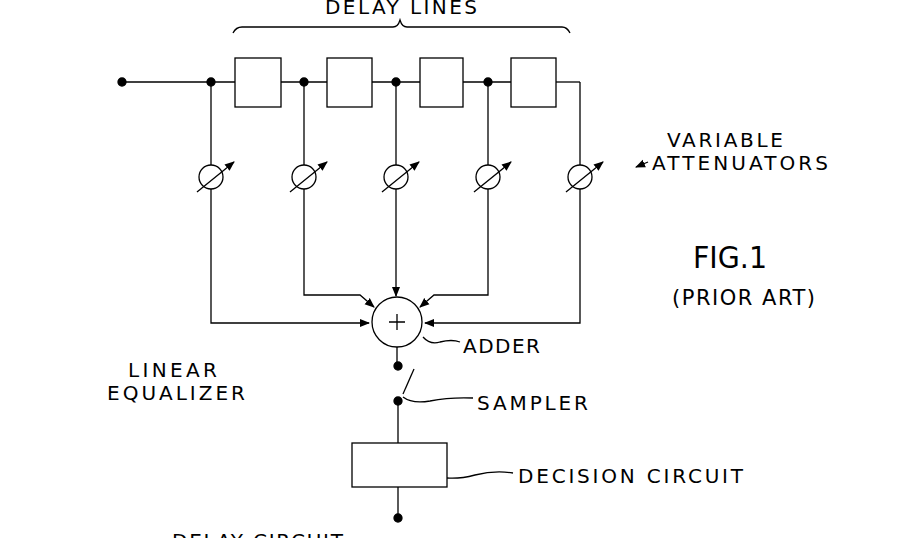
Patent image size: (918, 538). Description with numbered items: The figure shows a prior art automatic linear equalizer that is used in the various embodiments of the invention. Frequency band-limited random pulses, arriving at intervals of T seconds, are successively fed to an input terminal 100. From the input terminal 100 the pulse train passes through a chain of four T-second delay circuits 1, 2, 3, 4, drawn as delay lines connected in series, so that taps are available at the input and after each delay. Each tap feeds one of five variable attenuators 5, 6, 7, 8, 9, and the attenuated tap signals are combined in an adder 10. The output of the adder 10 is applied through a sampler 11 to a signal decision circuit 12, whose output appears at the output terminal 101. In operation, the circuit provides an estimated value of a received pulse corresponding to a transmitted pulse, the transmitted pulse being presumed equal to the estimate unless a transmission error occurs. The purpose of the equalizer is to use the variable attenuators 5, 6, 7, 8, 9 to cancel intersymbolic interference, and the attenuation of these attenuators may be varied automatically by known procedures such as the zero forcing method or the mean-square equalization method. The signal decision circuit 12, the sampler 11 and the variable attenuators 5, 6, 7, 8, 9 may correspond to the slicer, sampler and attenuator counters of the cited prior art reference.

The input terminal 100 is at (118, 85).
The T-second delay circuit 1 is at (267, 58).
The T-second delay circuit 2 is at (357, 58).
The T-second delay circuit 3 is at (450, 58).
The T-second delay circuit 4 is at (540, 58).
The variable attenuator 5 is at (222, 189).
The variable attenuator 6 is at (315, 189).
The variable attenuator 7 is at (406, 189).
The variable attenuator 8 is at (500, 189).
The variable attenuator 9 is at (592, 189).
The adder 10 is at (413, 297).
The sampler 11 is at (413, 379).
The signal decision circuit 12 is at (447, 458).
The output terminal 101 is at (402, 520).